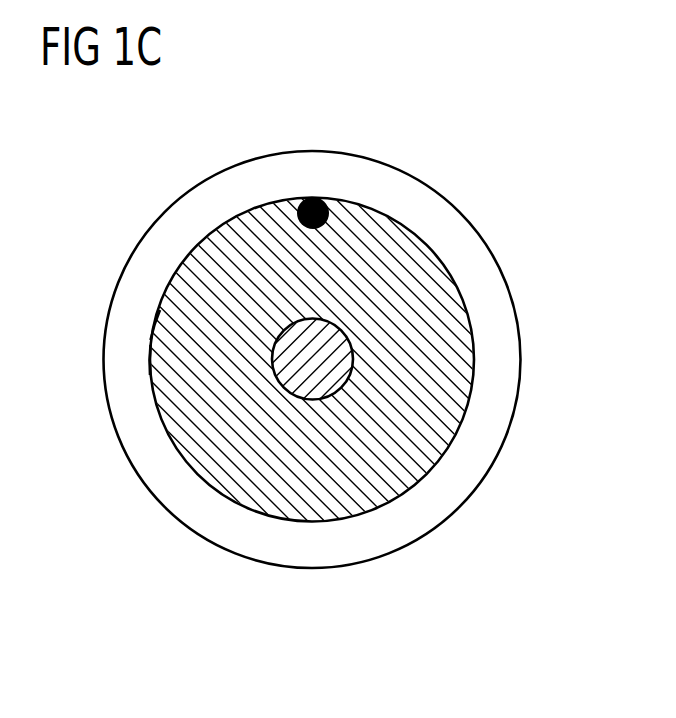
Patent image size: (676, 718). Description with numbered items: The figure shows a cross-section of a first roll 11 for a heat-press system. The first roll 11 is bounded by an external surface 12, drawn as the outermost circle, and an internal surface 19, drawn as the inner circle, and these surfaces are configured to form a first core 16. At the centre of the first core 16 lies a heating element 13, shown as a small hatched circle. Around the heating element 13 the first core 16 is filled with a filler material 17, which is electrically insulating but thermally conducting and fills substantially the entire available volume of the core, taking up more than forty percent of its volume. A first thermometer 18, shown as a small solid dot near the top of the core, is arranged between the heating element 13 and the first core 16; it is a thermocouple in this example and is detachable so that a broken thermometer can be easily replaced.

The first roll 11 is at (118, 178).
The external surface 12 is at (132, 468).
The heating element 13 is at (336, 372).
The first core 16 is at (128, 312).
The filler material 17 is at (453, 323).
The first thermometer 18 is at (312, 204).
The internal surface 19 is at (147, 362).